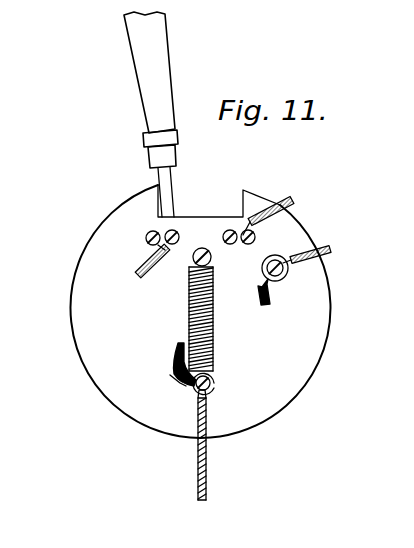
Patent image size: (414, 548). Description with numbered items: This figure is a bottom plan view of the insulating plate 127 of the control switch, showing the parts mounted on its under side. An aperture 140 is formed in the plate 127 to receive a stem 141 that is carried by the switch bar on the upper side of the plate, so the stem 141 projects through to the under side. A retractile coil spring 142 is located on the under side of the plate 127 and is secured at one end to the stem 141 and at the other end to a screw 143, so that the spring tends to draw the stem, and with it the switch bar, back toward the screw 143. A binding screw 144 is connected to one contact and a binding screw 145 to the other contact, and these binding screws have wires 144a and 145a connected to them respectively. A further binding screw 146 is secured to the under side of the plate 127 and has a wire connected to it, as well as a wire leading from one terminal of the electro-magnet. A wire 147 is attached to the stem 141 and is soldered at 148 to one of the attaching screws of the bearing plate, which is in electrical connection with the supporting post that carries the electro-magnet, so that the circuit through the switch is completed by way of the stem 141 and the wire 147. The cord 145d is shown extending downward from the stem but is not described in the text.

The insulating plate 127 is at (313, 343).
The aperture 140 is at (206, 389).
The stem 141 is at (196, 392).
The retractile coil spring 142 is at (214, 330).
The screw 143 is at (195, 259).
The binding screw 144 is at (152, 232).
The wire 144a is at (143, 270).
The binding screw 145 is at (236, 228).
The wire 145a is at (295, 202).
The cord 145d is at (207, 463).
The binding screw 146 is at (290, 270).
The wire 147 is at (170, 383).
The soldered joint 148 is at (176, 355).